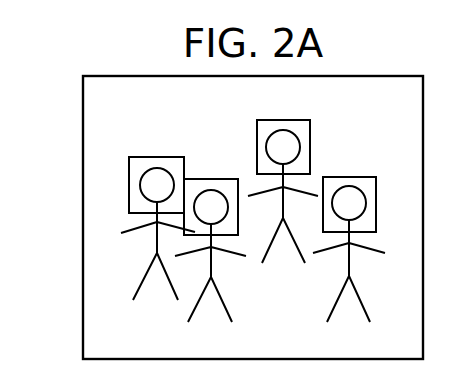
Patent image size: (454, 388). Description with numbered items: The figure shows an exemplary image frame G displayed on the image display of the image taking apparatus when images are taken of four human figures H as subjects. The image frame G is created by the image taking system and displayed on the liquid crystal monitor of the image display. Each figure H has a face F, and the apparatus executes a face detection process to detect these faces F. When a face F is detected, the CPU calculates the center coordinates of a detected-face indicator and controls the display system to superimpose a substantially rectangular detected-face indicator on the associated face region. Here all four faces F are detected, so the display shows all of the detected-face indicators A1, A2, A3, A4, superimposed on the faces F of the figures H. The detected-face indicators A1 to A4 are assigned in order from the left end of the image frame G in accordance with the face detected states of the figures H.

The image frame G is at (83, 216).
The detected-face indicator A1 is at (131, 157).
The detected-face indicator A2 is at (204, 179).
The detected-face indicator A3 is at (298, 120).
The detected-face indicator A4 is at (373, 177).
The face F is at (156, 168).
The figure H is at (140, 263).